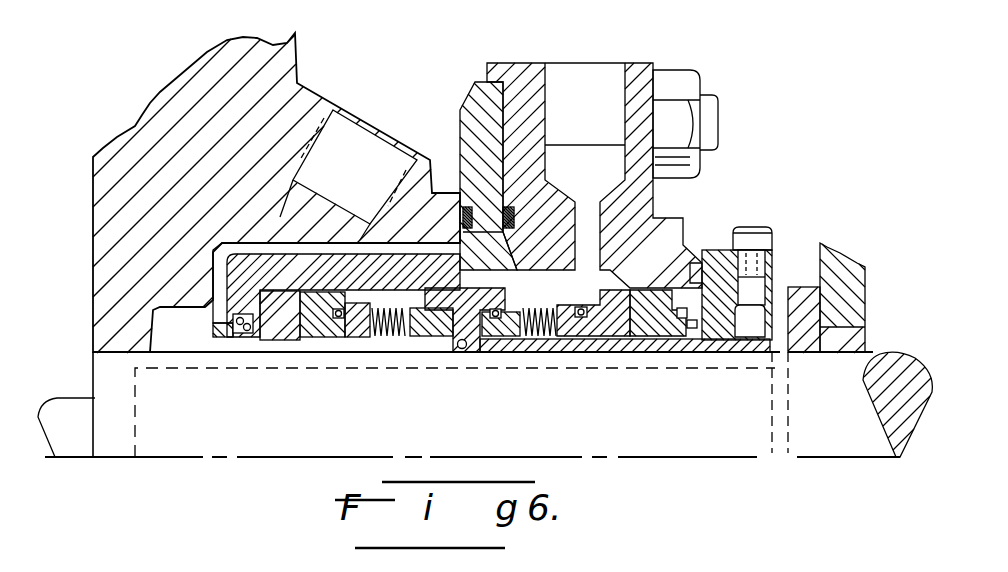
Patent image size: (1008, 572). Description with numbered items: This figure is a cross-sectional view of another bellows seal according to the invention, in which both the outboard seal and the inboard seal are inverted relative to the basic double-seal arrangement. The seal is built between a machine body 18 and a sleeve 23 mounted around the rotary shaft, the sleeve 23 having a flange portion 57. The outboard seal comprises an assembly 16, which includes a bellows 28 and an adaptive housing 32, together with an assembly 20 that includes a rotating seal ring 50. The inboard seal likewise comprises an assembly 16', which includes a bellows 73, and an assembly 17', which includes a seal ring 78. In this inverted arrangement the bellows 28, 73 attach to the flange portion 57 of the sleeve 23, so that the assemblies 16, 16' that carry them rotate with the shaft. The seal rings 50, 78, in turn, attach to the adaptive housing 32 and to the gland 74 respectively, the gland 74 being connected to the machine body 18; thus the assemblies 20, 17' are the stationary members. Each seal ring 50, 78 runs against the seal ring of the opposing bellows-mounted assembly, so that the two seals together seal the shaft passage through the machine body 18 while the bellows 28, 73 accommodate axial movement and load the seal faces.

The machine body 18 is at (200, 80).
The flange portion 57 is at (453, 288).
The adaptive housing 32 is at (668, 212).
The gland 74 is at (240, 275).
The rotating seal ring 78 is at (250, 340).
The rotary assembly 17' is at (266, 364).
The bellows 73 is at (391, 340).
The stationary assembly 16' is at (382, 364).
The bellows 28 is at (540, 347).
The stationary assembly 16 is at (575, 364).
The rotating seal ring 50 is at (643, 323).
The rotary assembly 20 is at (649, 358).
The sleeve 23 is at (700, 340).